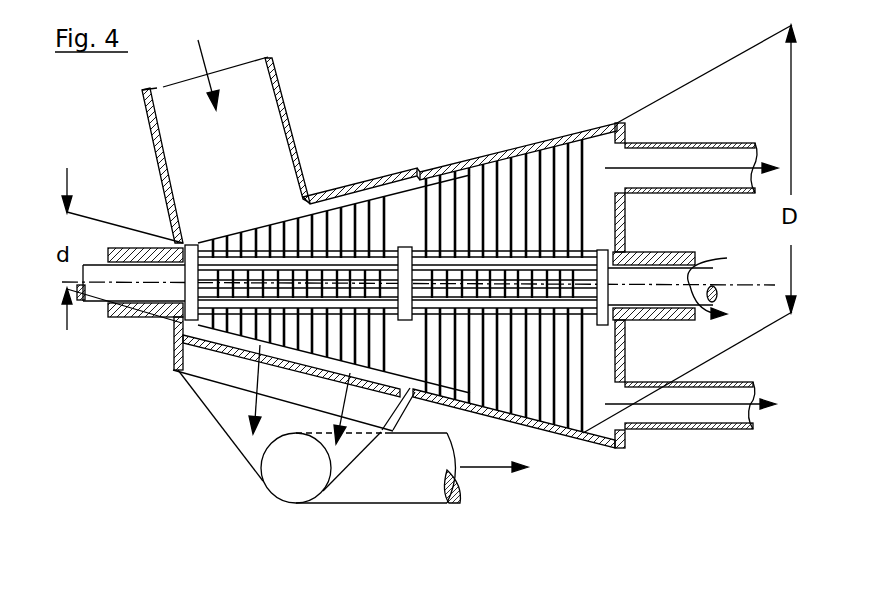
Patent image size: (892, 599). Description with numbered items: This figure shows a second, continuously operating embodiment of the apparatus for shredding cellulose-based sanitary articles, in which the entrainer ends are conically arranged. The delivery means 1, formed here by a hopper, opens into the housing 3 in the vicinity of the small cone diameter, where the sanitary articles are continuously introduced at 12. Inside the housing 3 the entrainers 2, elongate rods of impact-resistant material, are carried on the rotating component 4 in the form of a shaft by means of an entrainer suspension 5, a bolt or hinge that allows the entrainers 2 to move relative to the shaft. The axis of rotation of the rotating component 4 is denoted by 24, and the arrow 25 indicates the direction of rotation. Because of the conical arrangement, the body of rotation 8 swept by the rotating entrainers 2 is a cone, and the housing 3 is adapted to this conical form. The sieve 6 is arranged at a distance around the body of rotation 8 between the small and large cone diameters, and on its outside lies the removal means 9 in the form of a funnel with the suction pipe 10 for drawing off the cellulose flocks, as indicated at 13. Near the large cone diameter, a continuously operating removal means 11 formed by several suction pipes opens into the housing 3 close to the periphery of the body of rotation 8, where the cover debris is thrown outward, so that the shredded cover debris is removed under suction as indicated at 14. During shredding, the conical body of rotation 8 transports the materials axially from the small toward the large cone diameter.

The delivery means 1 is at (277, 112).
The entrainers 2 is at (349, 208).
The housing 3 is at (613, 457).
The rotating component 4 is at (187, 375).
The entrainer suspension 5 is at (214, 252).
The sieve 6 is at (230, 352).
The body of rotation 8 is at (372, 432).
The removal means 9 is at (245, 435).
The suction pipe 10 is at (425, 492).
The removal means 11 is at (688, 160).
The introduction of sanitary articles 12 is at (201, 47).
The removal of cellulose flocks 13 is at (497, 470).
The removal of cover debris 14 is at (740, 163).
The axis of rotation 24 is at (110, 285).
The arrow indicating rotation 25 is at (706, 254).